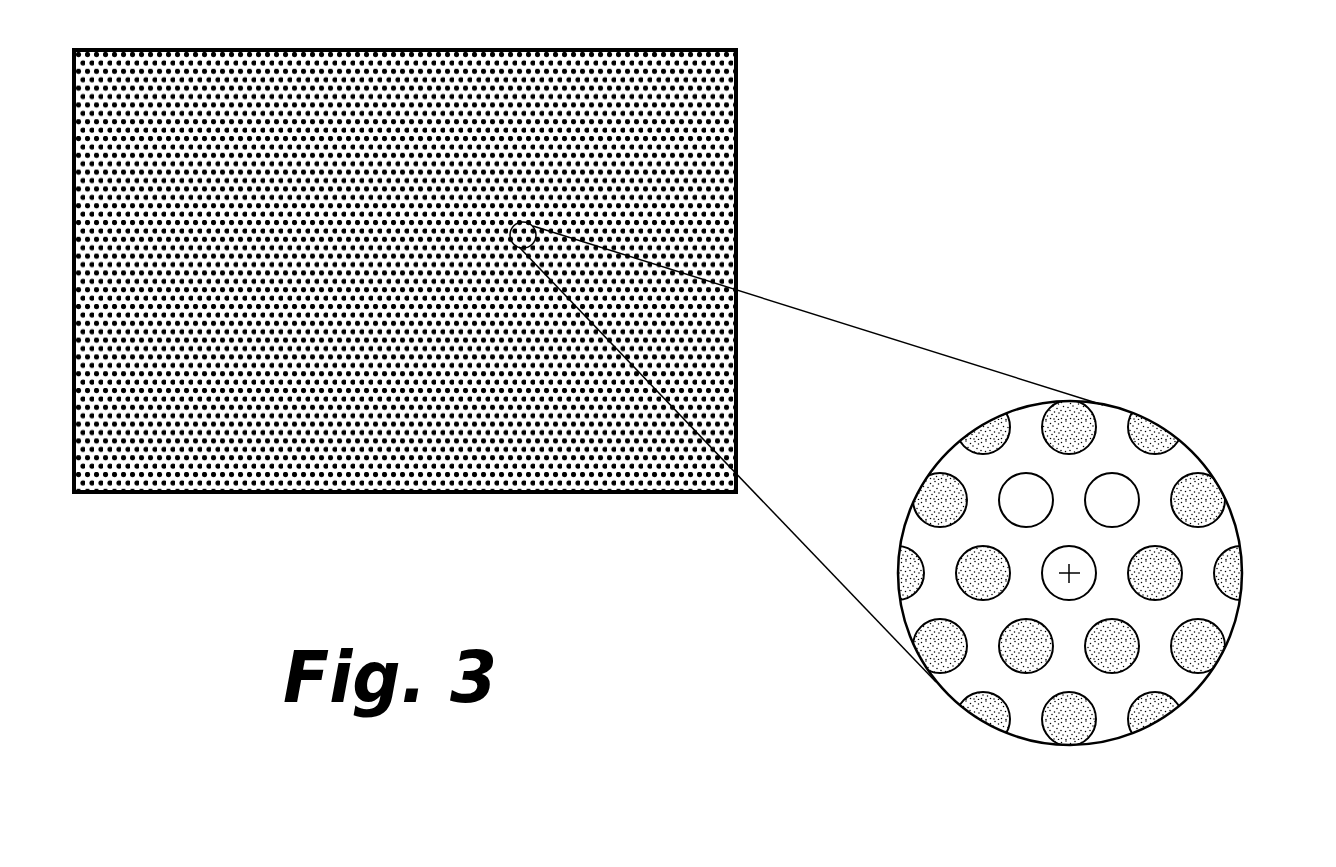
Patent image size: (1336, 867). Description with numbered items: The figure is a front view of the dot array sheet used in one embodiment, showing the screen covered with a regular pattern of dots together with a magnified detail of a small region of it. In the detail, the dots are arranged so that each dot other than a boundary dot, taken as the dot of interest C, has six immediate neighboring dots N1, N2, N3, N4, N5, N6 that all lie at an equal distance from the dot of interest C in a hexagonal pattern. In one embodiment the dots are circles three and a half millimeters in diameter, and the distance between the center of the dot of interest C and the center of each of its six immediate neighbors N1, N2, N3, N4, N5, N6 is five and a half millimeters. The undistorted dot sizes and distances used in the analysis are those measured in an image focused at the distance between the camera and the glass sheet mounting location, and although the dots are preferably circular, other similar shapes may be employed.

The immediate neighboring dot N1 is at (1025, 500).
The immediate neighboring dot N2 is at (1113, 498).
The immediate neighboring dot N3 is at (1157, 573).
The immediate neighboring dot N4 is at (1113, 647).
The immediate neighboring dot N5 is at (1027, 647).
The immediate neighboring dot N6 is at (983, 573).
The dot of interest C is at (1067, 580).